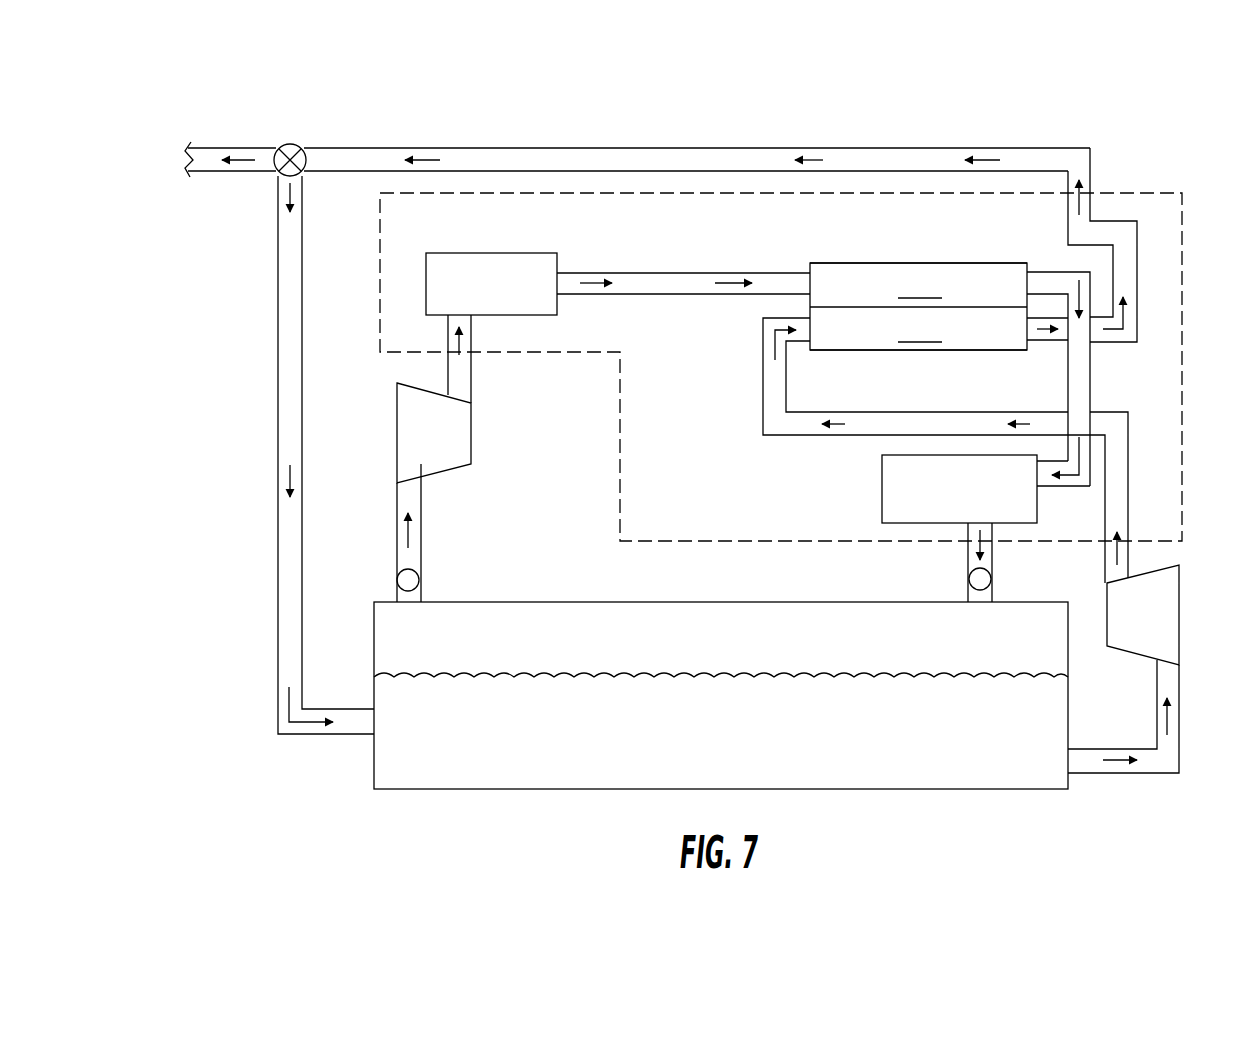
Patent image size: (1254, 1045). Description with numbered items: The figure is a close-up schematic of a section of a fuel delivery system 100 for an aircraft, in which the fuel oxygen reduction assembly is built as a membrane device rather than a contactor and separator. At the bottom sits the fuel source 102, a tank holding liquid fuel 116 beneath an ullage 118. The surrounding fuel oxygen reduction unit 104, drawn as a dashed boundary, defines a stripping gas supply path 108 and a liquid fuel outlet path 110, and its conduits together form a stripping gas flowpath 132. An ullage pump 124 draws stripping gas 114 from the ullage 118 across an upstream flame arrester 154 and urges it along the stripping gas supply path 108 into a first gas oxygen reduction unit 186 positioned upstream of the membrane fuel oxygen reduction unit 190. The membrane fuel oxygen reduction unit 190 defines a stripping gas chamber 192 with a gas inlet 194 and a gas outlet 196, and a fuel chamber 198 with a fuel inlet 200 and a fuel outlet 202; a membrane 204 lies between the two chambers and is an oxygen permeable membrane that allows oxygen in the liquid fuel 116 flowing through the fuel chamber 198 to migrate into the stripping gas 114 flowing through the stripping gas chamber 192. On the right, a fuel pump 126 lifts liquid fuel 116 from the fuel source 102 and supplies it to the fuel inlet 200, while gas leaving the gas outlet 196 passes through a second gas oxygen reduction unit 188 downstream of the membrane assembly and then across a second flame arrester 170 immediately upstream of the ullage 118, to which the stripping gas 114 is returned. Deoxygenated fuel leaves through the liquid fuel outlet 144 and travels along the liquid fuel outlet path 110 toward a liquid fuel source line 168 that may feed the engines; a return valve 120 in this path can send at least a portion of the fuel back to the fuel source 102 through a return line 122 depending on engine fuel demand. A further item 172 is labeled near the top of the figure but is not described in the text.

The fuel delivery system 100 is at (862, 50).
The fuel source 102 is at (721, 689).
The fuel oxygen reduction unit 104 is at (618, 188).
The stripping gas supply path 108 is at (481, 523).
The liquid fuel outlet path 110 is at (880, 142).
The stripping gas 114 is at (746, 270).
The liquid fuel 116 is at (965, 158).
The ullage 118 is at (550, 620).
The return valve 120 is at (297, 147).
The return line 122 is at (278, 380).
The ullage pump 124 is at (397, 418).
The fuel pump 126 is at (1180, 605).
The stripping gas flowpath 132 is at (425, 498).
The liquid fuel outlet 144 is at (1086, 218).
The upstream flame arrester 154 is at (412, 582).
The liquid fuel source line 168 is at (241, 146).
The second flame arrester 170 is at (975, 579).
The fuel supply assembly 172 is at (510, 55).
The first gas oxygen reduction unit 186 is at (500, 253).
The second gas oxygen reduction unit 188 is at (882, 492).
The membrane fuel oxygen reduction unit 190 is at (910, 231).
The stripping gas chamber 192 is at (918, 282).
The gas inlet 194 is at (806, 274).
The gas outlet 196 is at (1034, 277).
The fuel chamber 198 is at (918, 330).
The fuel inlet 200 is at (800, 352).
The fuel outlet 202 is at (1041, 353).
The membrane 204 is at (870, 308).